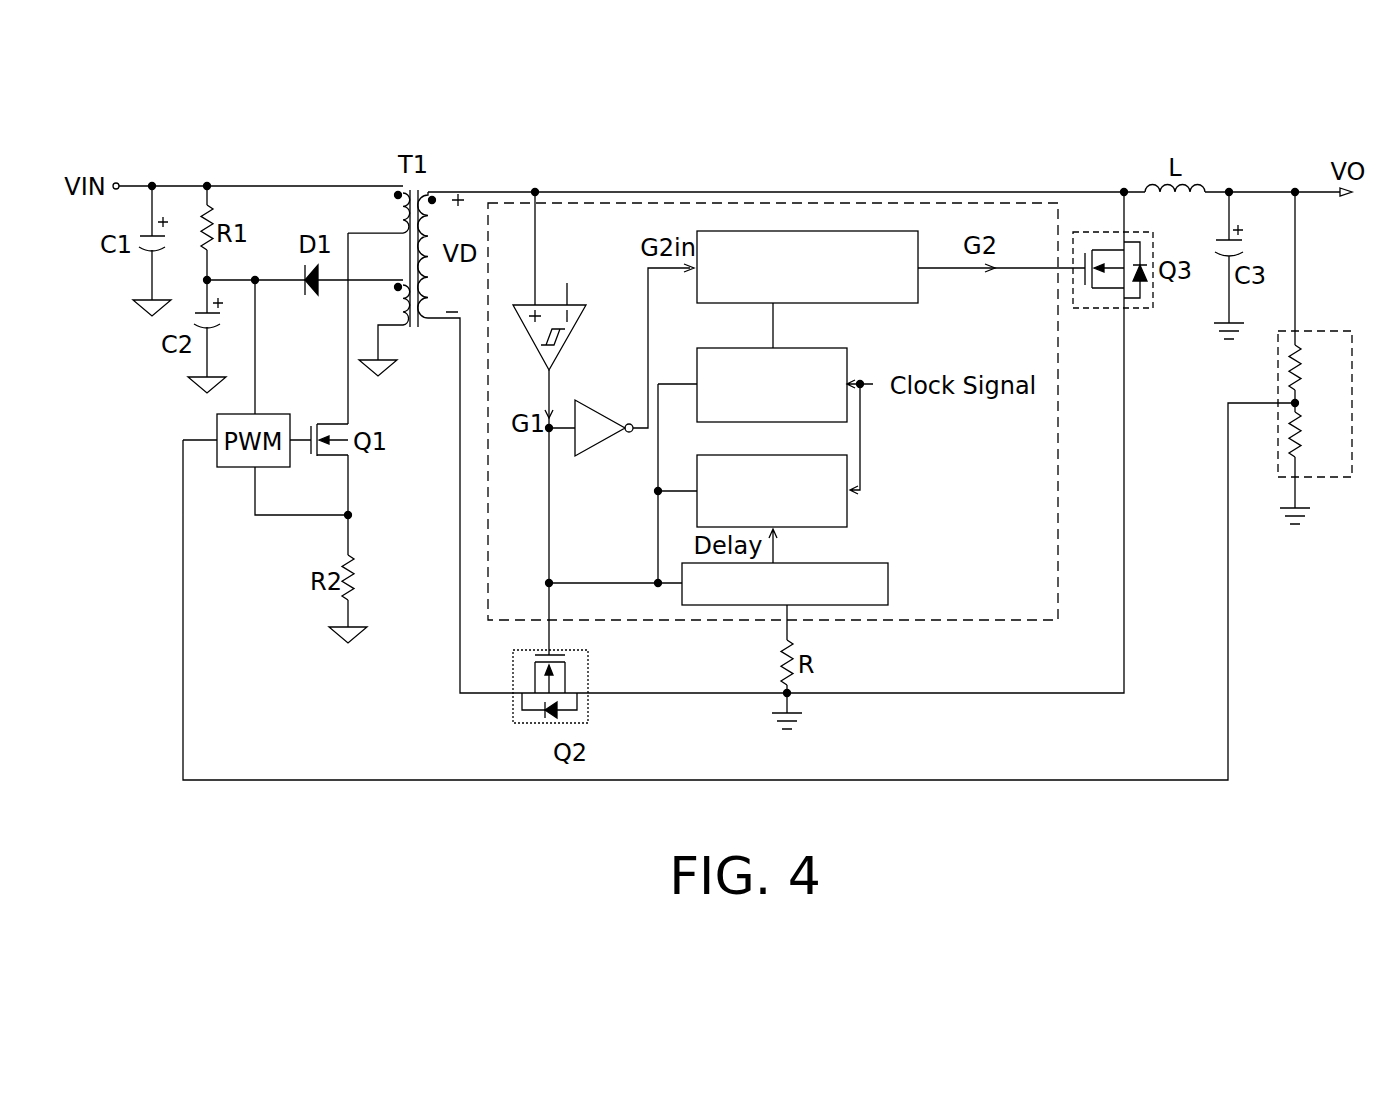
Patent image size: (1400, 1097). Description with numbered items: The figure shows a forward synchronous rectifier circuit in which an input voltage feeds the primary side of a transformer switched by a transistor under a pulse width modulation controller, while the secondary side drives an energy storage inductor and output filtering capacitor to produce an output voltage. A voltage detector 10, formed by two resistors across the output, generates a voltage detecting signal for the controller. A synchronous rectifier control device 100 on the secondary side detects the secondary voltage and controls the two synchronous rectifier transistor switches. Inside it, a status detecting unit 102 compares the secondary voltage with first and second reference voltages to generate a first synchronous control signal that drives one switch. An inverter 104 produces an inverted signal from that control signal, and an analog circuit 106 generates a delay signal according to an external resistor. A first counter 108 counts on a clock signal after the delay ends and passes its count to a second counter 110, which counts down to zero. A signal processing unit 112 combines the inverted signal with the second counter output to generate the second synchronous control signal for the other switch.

The voltage detector 10 is at (1352, 392).
The synchronous rectifier control device 100 is at (1058, 535).
The status detecting unit 102 is at (536, 342).
The inverter 104 is at (600, 418).
The analog circuit 106 is at (888, 585).
The first counter 108 is at (847, 523).
The second counter 110 is at (847, 355).
The signal processing unit 112 is at (918, 288).